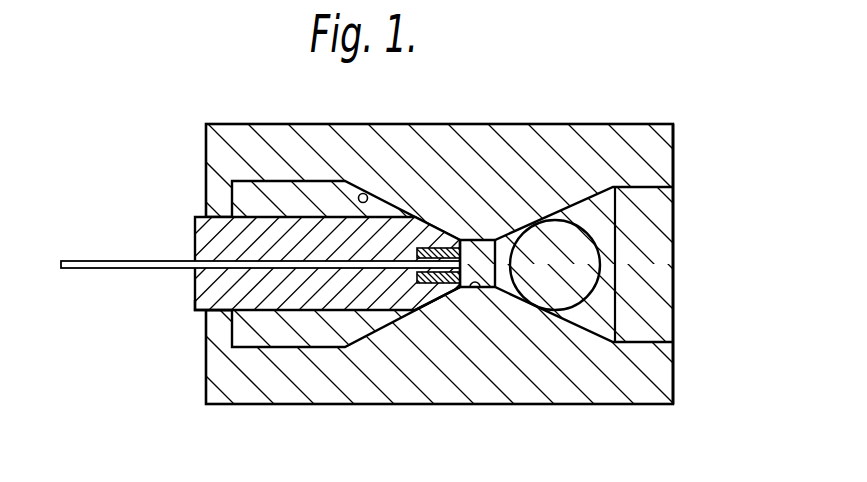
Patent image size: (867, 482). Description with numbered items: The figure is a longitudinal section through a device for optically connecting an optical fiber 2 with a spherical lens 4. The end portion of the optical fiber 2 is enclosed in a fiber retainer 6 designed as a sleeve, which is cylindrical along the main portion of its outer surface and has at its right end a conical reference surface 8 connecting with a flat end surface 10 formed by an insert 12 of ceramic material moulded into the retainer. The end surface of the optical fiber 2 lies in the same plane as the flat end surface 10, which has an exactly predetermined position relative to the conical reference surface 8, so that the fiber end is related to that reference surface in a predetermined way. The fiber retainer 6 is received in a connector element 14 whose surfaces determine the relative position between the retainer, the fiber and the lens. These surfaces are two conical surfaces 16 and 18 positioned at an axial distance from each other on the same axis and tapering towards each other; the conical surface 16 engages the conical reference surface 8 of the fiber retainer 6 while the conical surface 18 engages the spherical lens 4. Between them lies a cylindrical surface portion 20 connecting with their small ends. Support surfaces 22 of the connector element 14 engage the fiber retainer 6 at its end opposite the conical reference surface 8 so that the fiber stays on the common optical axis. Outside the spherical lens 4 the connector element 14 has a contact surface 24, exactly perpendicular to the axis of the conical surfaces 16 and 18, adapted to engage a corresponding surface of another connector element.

The optical fiber 2 is at (123, 262).
The spherical lens 4 is at (588, 265).
The fiber retainer 6 is at (215, 236).
The conical reference surface 8 is at (450, 242).
The flat end surface 10 is at (478, 242).
The insert 12 is at (432, 285).
The connector element 14 is at (385, 367).
The conical surface 16 is at (367, 196).
The conical surface 18 is at (572, 205).
The cylindrical surface portion 20 is at (477, 288).
The support surfaces 22 is at (207, 306).
The contact surface 24 is at (673, 367).